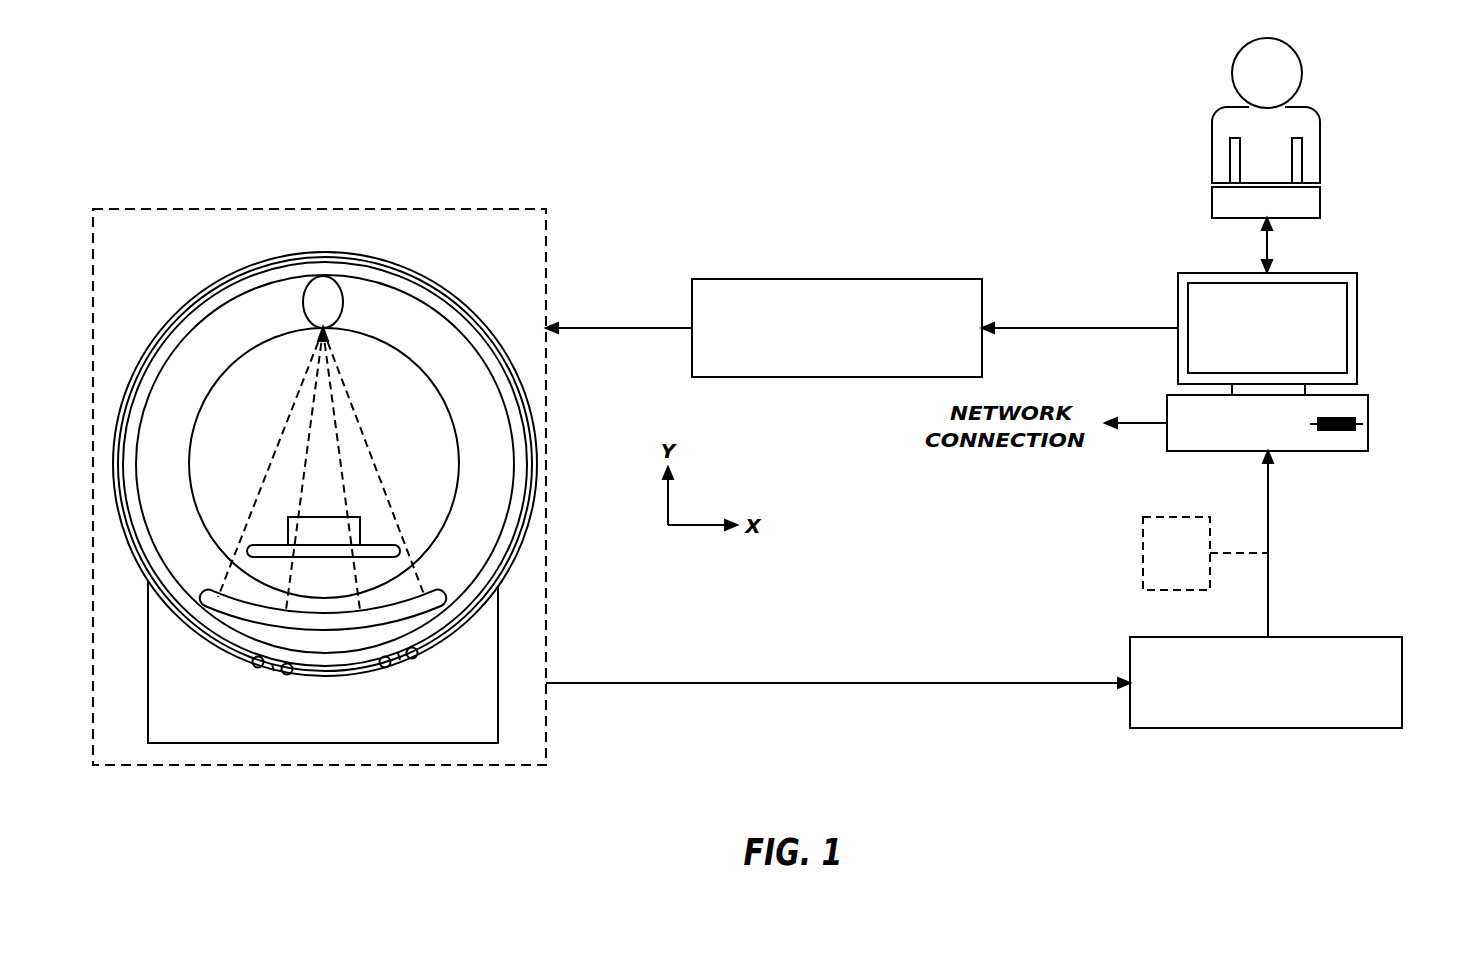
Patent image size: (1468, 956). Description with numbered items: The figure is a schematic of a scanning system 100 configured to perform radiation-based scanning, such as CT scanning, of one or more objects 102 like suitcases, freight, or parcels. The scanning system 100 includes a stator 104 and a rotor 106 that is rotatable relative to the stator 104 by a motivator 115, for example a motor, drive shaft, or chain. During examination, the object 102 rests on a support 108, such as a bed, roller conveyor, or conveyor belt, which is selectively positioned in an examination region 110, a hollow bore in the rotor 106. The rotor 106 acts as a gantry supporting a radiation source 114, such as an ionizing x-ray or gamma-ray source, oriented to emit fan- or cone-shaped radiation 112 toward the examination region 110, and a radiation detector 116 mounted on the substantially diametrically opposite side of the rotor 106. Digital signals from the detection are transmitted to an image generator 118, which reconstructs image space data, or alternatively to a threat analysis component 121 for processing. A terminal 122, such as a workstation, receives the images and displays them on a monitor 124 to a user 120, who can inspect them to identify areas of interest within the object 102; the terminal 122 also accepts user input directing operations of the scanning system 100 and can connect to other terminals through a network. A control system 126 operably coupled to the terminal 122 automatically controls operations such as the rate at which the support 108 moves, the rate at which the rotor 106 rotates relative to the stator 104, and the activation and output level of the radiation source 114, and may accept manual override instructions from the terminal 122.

The scanning system 100 is at (218, 132).
The object 102 is at (362, 528).
The stator 104 is at (447, 288).
The rotor 106 is at (203, 303).
The support 108 is at (262, 545).
The examination region 110 is at (321, 486).
The radiation 112 is at (290, 412).
The radiation source 114 is at (346, 301).
The motivator 115 is at (390, 666).
The radiation detector 116 is at (240, 613).
The image generator 118 is at (1372, 637).
The user 120 is at (1322, 137).
The threat analysis component 121 is at (1205, 553).
The terminal 122 is at (1368, 407).
The monitor 124 is at (1357, 292).
The control system 126 is at (845, 279).